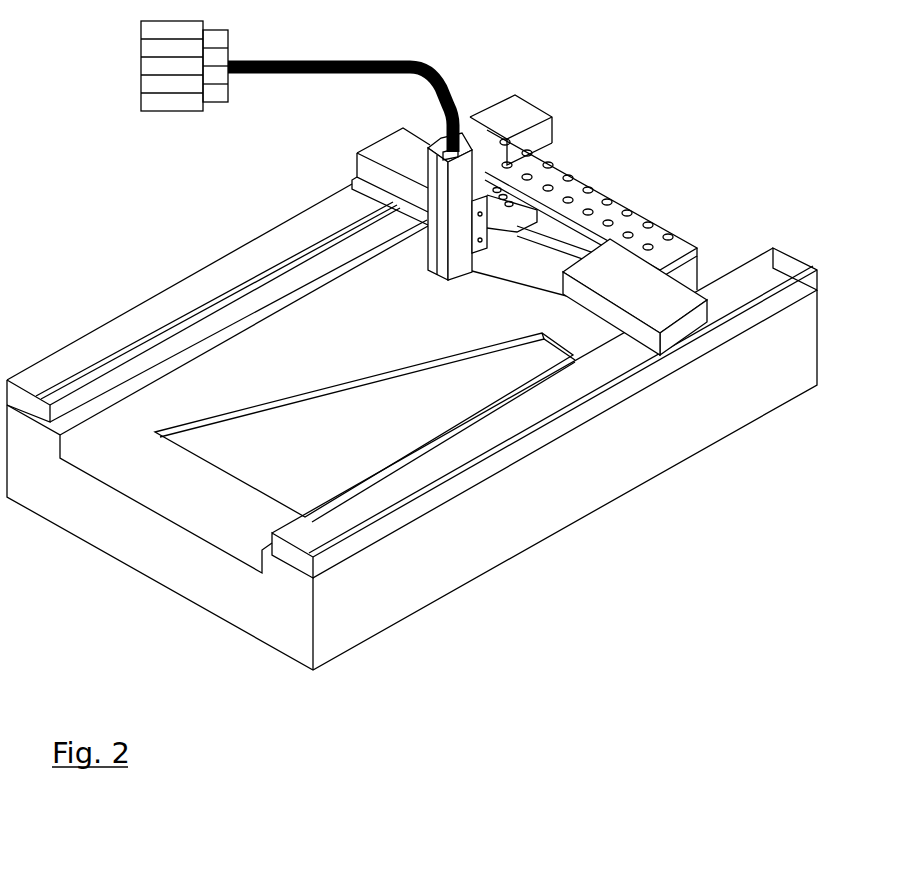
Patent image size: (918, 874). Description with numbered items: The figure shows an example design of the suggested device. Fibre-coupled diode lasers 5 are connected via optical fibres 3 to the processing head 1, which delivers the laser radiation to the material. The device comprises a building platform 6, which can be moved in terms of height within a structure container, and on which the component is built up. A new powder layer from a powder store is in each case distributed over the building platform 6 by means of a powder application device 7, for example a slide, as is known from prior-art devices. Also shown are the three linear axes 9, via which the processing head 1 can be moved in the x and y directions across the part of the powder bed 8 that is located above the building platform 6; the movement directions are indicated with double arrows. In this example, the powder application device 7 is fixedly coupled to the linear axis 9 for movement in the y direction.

The processing head 1 is at (430, 233).
The optical fibres 3 is at (463, 111).
The fibre-coupled diode lasers 5 is at (158, 73).
The building platform 6 is at (529, 365).
The powder application device 7 is at (669, 253).
The powder bed 8 is at (320, 333).
The linear axes 9 is at (527, 100).